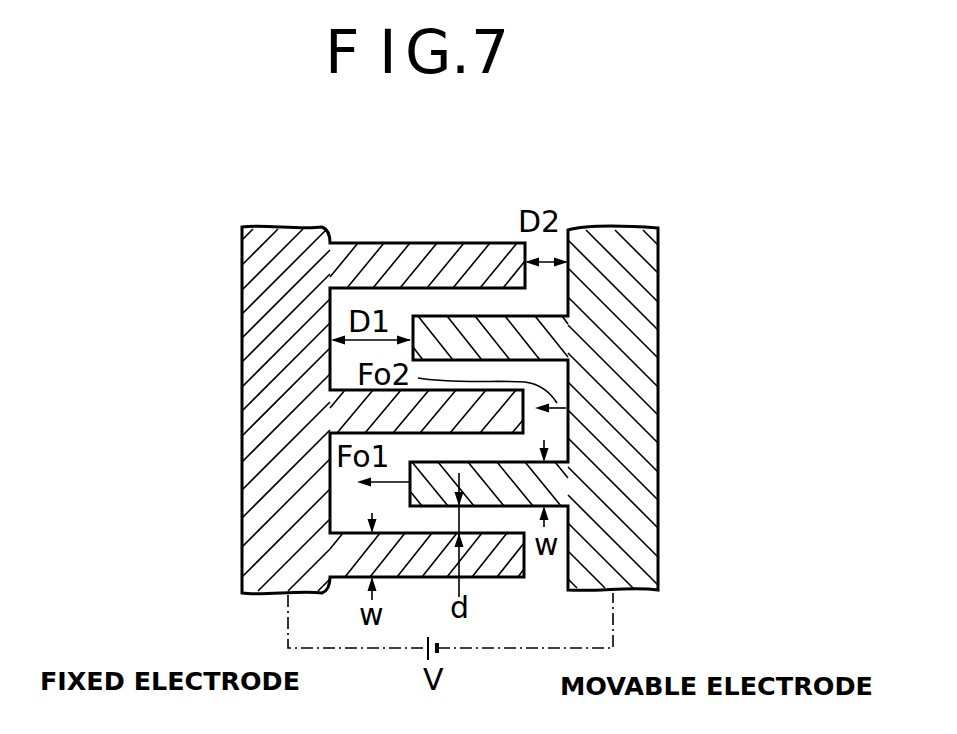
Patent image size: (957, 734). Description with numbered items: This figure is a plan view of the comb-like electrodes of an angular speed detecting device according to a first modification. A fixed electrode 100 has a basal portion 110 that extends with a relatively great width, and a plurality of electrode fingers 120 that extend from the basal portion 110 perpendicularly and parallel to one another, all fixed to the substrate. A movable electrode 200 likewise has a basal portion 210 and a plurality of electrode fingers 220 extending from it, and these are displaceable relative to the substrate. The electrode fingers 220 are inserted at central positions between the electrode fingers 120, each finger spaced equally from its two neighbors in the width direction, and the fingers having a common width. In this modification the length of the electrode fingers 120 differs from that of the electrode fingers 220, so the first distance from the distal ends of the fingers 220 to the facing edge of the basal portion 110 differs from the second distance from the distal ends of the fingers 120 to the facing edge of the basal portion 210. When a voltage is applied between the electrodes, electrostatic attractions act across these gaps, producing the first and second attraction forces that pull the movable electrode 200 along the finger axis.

The fixed electrode 100 is at (329, 418).
The basal portion 110 is at (243, 391).
The electrode fingers 120 is at (388, 242).
The movable electrode 200 is at (590, 434).
The basal portion 210 is at (658, 396).
The electrode fingers 220 is at (470, 316).